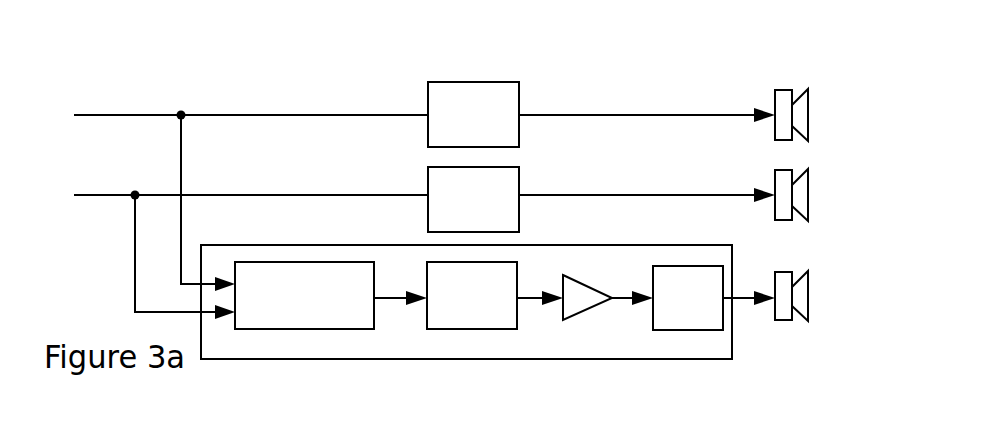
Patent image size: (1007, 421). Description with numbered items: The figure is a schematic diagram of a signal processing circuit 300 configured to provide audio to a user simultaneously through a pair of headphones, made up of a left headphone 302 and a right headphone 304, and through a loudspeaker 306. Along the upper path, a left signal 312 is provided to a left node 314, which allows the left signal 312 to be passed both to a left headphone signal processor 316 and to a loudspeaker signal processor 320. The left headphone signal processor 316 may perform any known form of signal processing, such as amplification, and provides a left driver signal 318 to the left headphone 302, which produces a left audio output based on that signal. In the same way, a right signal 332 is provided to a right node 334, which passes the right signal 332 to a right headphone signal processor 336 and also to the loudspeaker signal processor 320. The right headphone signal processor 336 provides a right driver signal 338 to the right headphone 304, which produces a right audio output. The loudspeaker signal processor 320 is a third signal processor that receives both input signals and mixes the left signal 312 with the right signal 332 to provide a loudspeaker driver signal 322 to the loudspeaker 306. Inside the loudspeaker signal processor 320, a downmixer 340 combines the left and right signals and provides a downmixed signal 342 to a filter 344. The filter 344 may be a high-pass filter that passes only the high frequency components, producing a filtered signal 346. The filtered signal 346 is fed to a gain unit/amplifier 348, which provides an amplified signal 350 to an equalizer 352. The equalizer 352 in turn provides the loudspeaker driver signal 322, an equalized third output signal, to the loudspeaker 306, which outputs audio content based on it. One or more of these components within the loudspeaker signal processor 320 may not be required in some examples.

The signal processing circuit 300 is at (84, 42).
The left headphone 302 is at (810, 112).
The right headphone 304 is at (810, 193).
The loudspeaker 306 is at (809, 300).
The left signal 312 is at (100, 114).
The left node 314 is at (182, 112).
The left headphone signal processor 316 is at (428, 110).
The left driver signal 318 is at (601, 113).
The loudspeaker signal processor 320 is at (505, 359).
The loudspeaker driver signal 322 is at (739, 300).
The right signal 332 is at (96, 197).
The right node 334 is at (133, 199).
The right headphone signal processor 336 is at (428, 208).
The right driver signal 338 is at (634, 197).
The downmixer 340 is at (287, 330).
The downmixed signal 342 is at (390, 300).
The filter 344 is at (461, 330).
The filtered signal 346 is at (525, 300).
The gain unit/amplifier 348 is at (596, 305).
The amplified signal 350 is at (623, 296).
The equalizer 352 is at (724, 279).